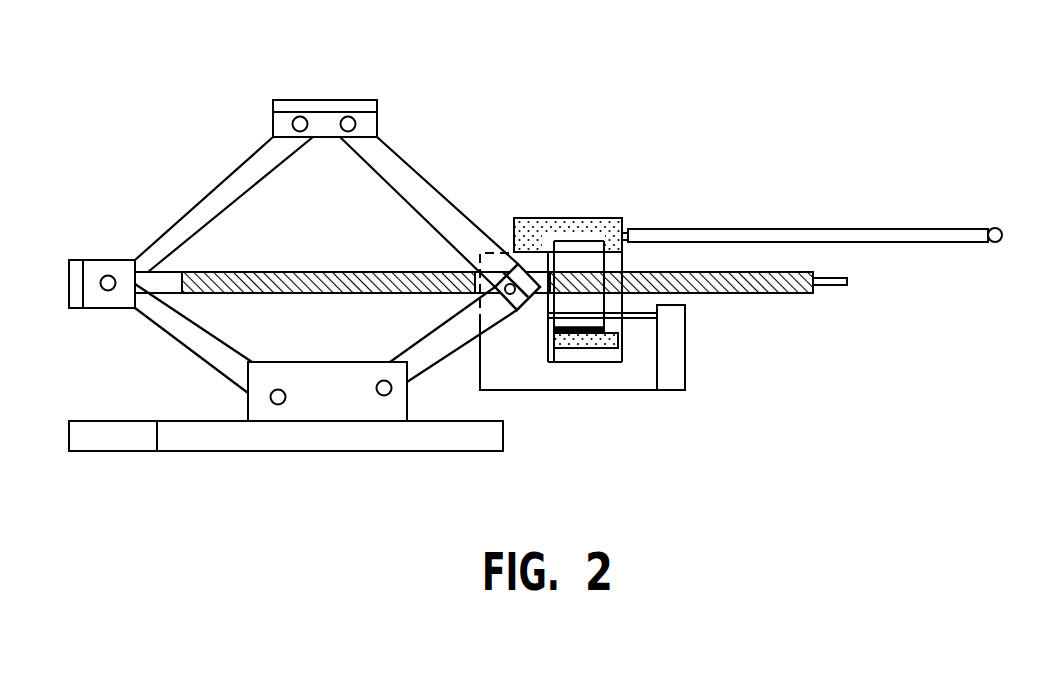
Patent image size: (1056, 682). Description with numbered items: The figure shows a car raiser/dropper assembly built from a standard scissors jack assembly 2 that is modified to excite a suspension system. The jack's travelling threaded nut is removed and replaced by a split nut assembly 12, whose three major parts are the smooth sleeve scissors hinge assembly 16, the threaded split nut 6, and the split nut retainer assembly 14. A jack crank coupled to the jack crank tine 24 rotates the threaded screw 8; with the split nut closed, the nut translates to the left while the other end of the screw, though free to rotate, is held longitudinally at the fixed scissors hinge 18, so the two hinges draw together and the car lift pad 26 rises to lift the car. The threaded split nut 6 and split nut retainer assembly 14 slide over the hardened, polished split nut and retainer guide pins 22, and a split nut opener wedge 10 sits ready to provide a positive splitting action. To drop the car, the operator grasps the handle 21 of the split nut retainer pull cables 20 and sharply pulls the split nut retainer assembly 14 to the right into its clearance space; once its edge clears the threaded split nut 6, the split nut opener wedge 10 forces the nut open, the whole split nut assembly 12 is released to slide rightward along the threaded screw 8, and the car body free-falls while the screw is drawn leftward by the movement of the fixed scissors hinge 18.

The scissors jack assembly 2 is at (212, 191).
The threaded split nut 6 is at (591, 334).
The threaded screw 8 is at (762, 271).
The split nut opener wedge 10 is at (530, 238).
The split nut assembly 12 is at (573, 216).
The split nut retainer assembly 14 is at (570, 357).
The smooth sleeve scissors hinge assembly 16 is at (532, 327).
The fixed scissors hinge 18 is at (106, 309).
The split nut retainer pull cables 20 is at (703, 228).
The handle 21 is at (1000, 228).
The split nut and retainer guide pins 22 is at (637, 322).
The jack crank tine 24 is at (835, 287).
The car lift pad 26 is at (332, 100).